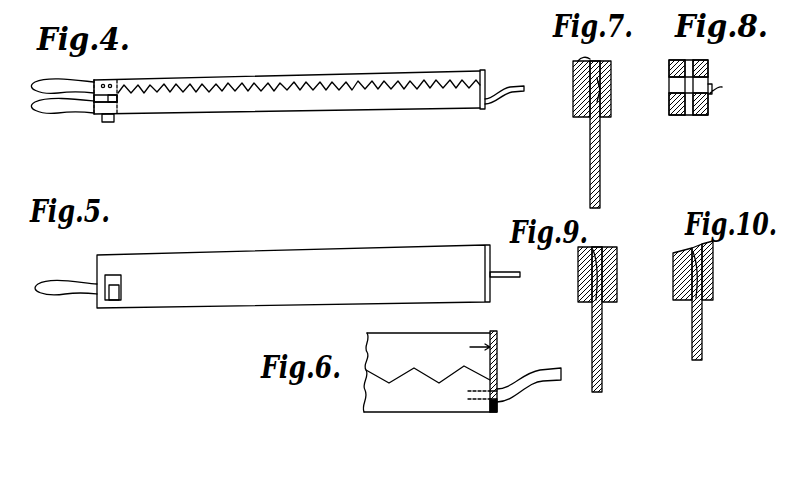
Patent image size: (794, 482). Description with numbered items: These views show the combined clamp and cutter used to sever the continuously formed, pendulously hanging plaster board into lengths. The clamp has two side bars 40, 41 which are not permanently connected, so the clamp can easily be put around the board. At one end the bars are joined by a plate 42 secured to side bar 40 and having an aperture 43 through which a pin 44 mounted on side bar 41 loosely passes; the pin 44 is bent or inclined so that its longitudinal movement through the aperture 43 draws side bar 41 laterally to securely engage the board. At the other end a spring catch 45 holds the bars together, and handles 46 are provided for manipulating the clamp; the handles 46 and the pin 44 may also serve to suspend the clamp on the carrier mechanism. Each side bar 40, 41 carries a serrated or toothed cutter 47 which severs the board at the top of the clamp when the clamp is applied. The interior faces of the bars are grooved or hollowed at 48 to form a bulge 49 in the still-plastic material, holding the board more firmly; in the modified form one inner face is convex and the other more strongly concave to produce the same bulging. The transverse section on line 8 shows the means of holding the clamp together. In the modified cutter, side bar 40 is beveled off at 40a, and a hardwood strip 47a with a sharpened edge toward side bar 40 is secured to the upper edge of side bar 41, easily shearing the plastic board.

In FIG. 4, the section line 8— 8 is at (103, 73).
In FIG. 4, the side bar 40 is at (252, 78).
In FIG. 5, the side bar 40 is at (406, 312).
In FIG. 6, the side bar 40 is at (404, 338).
In FIG. 7, the side bar 40 is at (578, 108).
In FIG. 8, the side bar 40 is at (688, 87).
In FIG. 9, the side bar 40 is at (584, 270).
In FIG. 10, the side bar 40 is at (680, 285).
In FIG. 10, the beveled edge 40a is at (690, 246).
In FIG. 4, the side bar 41 is at (258, 113).
In FIG. 5, the side bar 41 is at (271, 288).
In FIG. 6, the side bar 41 is at (396, 404).
In FIG. 7, the side bar 41 is at (610, 116).
In FIG. 9, the side bar 41 is at (617, 319).
In FIG. 10, the side bar 41 is at (714, 282).
In FIG. 4, the plate 42 is at (506, 75).
In FIG. 6, the plate 42 is at (500, 345).
In FIG. 6, the aperture 43 is at (500, 408).
In FIG. 4, the pin 44 is at (506, 100).
In FIG. 5, the pin 44 is at (512, 278).
In FIG. 6, the pin 44 is at (546, 376).
In FIG. 4, the spring catch 45 is at (118, 96).
In FIG. 5, the spring catch 45 is at (114, 301).
In FIG. 8, the spring catch 45 is at (712, 86).
In FIG. 4, the handle 46 is at (44, 90).
In FIG. 5, the handle 46 is at (62, 290).
In FIG. 4, the serrated cutter 47 is at (296, 88).
In FIG. 6, the serrated cutter 47 is at (428, 374).
In FIG. 7, the serrated cutter 47 is at (582, 60).
In FIG. 9, the serrated cutter 47 is at (594, 248).
In FIG. 10, the hardwood cutting strip 47a is at (710, 245).
In FIG. 7, the groove 48 is at (612, 78).
In FIG. 7, the bulge 49 is at (611, 93).